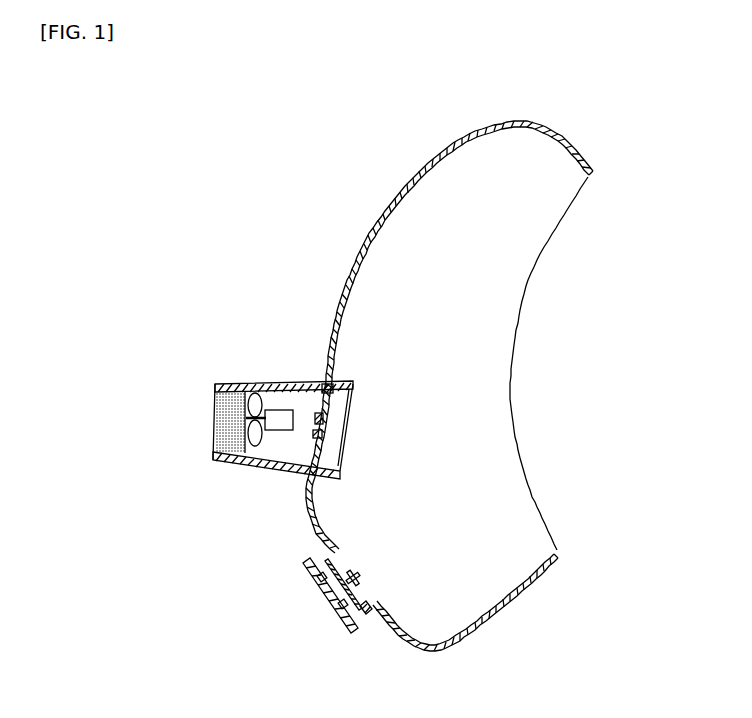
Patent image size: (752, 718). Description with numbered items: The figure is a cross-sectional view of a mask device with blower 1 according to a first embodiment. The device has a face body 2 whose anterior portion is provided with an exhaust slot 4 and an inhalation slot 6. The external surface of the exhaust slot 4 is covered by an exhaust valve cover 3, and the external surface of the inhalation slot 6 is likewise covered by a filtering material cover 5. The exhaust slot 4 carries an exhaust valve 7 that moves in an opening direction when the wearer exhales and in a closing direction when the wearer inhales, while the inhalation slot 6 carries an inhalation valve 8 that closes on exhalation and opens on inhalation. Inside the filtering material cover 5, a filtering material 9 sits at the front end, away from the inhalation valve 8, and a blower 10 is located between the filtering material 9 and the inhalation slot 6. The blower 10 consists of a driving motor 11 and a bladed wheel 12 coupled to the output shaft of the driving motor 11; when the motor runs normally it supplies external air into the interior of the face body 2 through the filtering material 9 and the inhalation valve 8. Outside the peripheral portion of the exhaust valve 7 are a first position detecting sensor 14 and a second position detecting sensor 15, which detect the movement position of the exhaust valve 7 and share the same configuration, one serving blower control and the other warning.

The mask device with blower 1 is at (431, 116).
The face body 2 is at (550, 132).
The exhaust valve cover 3 is at (360, 631).
The exhaust slot 4 is at (342, 562).
The filtering material cover 5 is at (270, 383).
The inhalation slot 6 is at (322, 402).
The exhaust valve 7 is at (367, 620).
The inhalation valve 8 is at (325, 400).
The filtering material 9 is at (216, 407).
The blower 10 is at (277, 510).
The driving motor 11 is at (274, 432).
The bladed wheel 12 is at (249, 448).
The first position detecting sensor 14 is at (340, 608).
The second position detecting sensor 15 is at (316, 590).